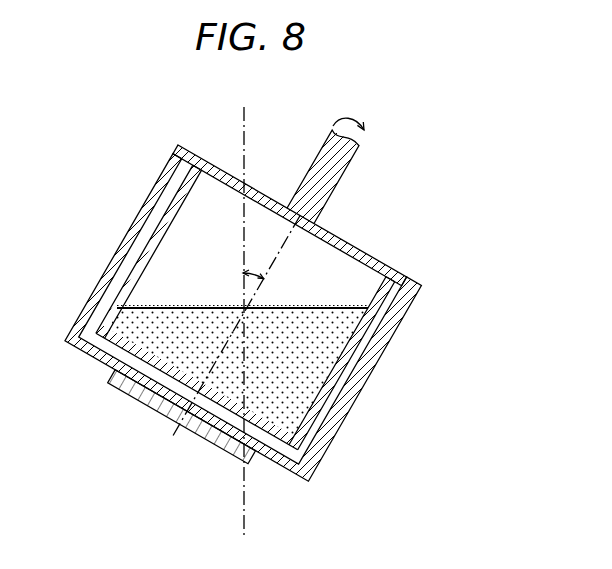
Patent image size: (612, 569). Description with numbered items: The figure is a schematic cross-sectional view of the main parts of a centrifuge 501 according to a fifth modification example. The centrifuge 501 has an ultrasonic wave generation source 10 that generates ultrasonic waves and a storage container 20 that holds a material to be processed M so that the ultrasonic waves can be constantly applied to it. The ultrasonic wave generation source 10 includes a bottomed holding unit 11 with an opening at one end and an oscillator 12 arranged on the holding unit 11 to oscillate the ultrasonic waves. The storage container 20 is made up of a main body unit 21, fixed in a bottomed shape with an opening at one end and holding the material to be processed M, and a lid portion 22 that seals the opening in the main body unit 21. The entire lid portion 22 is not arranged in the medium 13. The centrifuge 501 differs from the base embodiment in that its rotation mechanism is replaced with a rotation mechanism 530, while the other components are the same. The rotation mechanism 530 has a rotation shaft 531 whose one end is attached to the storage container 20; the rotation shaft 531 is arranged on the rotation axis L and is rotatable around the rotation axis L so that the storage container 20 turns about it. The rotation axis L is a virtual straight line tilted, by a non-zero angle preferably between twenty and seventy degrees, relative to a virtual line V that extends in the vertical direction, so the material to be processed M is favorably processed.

The centrifuge 501 is at (433, 186).
The storage container 20 is at (462, 238).
The main body unit 21 is at (413, 281).
The lid portion 22 is at (383, 263).
The ultrasonic wave generation source 10 is at (372, 447).
The medium 13 is at (302, 446).
The holding unit 11 is at (312, 471).
The oscillator 12 is at (249, 463).
The material to be processed M is at (192, 312).
The rotation mechanism 530 is at (312, 157).
The rotation shaft 531 is at (306, 174).
The rotation axis L is at (360, 118).
The virtual line V is at (243, 121).